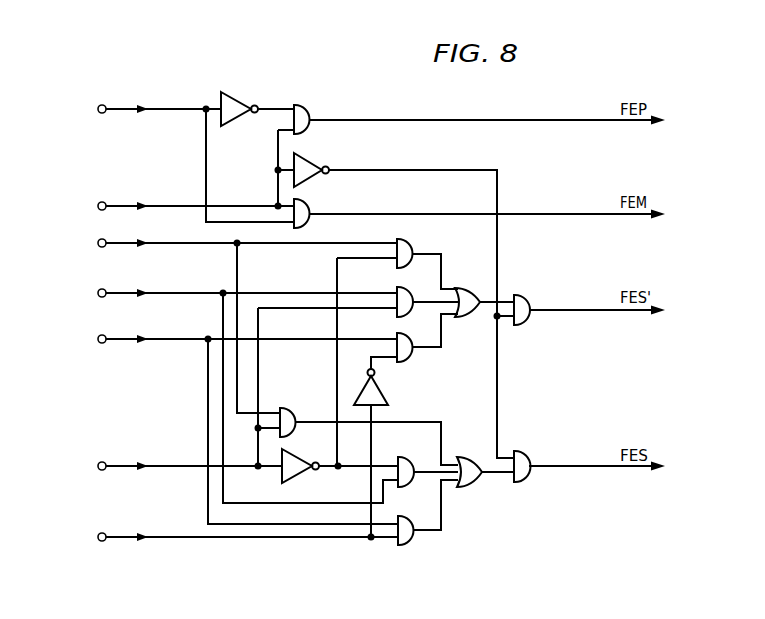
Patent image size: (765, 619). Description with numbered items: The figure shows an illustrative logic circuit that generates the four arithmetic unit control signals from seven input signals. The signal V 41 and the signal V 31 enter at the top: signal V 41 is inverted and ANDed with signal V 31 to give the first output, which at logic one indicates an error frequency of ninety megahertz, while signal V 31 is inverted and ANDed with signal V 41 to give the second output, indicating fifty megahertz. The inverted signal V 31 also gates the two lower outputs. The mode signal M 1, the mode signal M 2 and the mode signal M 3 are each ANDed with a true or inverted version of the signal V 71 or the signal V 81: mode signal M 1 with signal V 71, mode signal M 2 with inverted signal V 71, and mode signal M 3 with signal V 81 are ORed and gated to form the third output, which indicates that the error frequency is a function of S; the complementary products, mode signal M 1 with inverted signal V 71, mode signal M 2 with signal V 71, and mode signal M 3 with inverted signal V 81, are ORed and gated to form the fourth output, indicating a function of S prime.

The signal V41 41 is at (145, 111).
The signal V31 31 is at (181, 208).
The signal M1 1 is at (236, 245).
The signal M2 2 is at (236, 295).
The signal M3 3 is at (236, 341).
The signal V71 71 is at (175, 468).
The signal V81 81 is at (233, 539).